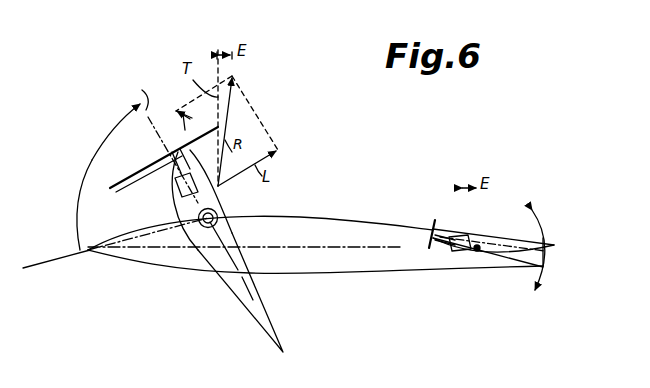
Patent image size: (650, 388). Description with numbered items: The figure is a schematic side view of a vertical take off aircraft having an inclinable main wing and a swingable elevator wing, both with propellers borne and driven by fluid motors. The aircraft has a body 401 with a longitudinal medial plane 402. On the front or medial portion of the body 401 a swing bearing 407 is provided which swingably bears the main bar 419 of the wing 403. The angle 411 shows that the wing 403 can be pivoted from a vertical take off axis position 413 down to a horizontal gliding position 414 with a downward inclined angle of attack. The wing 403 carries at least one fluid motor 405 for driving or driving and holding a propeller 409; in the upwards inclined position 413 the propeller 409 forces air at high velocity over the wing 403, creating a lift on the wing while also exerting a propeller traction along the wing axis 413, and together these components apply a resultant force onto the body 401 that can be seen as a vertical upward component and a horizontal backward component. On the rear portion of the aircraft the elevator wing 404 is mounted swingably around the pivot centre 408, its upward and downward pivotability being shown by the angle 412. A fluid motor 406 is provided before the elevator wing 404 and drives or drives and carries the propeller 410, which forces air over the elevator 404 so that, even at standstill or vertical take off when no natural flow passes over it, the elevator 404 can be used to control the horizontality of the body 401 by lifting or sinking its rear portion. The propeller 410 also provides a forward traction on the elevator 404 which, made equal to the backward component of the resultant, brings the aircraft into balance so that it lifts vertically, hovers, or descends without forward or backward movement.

The body 401 is at (345, 265).
The longitudinal medial plane 402 is at (303, 248).
The wing 403 is at (252, 303).
The elevator wing 404 is at (510, 258).
The fluid motor 405 is at (186, 188).
The fluid motor 406 is at (455, 243).
The swing bearing 407 is at (181, 265).
The pivot centre 408 is at (477, 253).
The propeller 409 is at (150, 166).
The propeller 410 is at (428, 242).
The angle 411 is at (78, 193).
The angle 412 is at (548, 226).
The vertical take off axis position 413 is at (145, 134).
The horizontal gliding position 414 is at (37, 267).
The main bar 419 is at (217, 215).